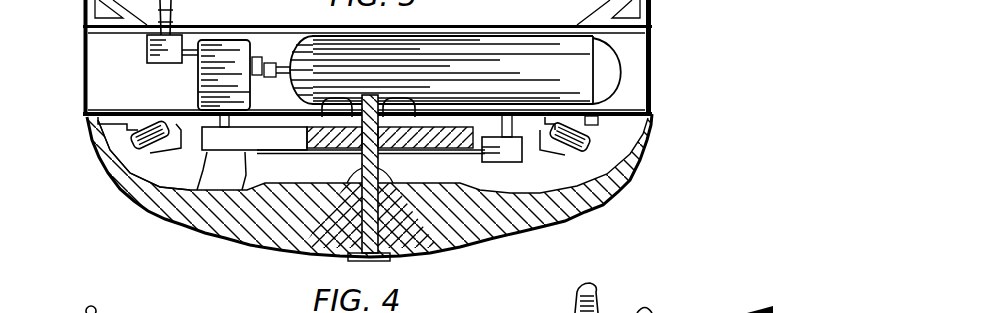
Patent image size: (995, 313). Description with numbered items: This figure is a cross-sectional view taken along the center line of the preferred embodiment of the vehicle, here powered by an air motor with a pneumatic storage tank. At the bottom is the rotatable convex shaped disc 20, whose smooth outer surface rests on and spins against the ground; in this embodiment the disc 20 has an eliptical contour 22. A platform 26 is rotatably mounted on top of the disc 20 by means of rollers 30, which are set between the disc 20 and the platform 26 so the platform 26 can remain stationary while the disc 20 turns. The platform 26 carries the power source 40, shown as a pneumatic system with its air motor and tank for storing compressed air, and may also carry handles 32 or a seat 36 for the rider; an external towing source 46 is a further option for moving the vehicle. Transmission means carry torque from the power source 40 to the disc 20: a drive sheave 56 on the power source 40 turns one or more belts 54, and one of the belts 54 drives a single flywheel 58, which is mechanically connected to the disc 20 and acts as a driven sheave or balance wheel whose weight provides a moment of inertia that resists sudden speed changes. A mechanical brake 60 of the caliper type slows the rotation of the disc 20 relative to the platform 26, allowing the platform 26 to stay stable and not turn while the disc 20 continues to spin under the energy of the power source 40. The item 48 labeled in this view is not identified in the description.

The rotatable convex shaped disc 20 is at (600, 198).
The eliptical contour 22 is at (123, 195).
The platform 26 is at (630, 107).
The rollers 30 is at (125, 140).
The handles 32 is at (78, 312).
The seat 36 is at (386, 106).
The power source 40 is at (197, 80).
The external towing source 46 is at (660, 312).
The pedestal block 48 is at (293, 247).
The belts 54 is at (242, 190).
The drive sheave 56 is at (197, 190).
The flywheel 58 is at (447, 248).
The mechanical brake 60 is at (518, 162).